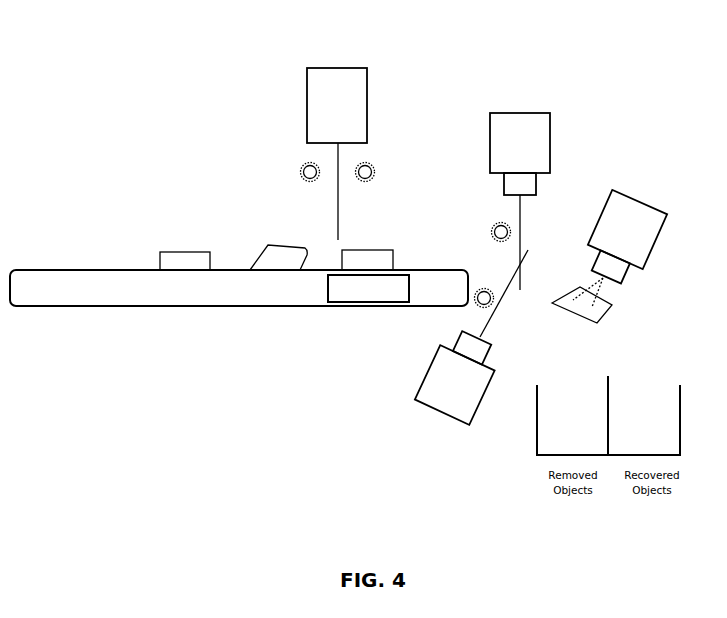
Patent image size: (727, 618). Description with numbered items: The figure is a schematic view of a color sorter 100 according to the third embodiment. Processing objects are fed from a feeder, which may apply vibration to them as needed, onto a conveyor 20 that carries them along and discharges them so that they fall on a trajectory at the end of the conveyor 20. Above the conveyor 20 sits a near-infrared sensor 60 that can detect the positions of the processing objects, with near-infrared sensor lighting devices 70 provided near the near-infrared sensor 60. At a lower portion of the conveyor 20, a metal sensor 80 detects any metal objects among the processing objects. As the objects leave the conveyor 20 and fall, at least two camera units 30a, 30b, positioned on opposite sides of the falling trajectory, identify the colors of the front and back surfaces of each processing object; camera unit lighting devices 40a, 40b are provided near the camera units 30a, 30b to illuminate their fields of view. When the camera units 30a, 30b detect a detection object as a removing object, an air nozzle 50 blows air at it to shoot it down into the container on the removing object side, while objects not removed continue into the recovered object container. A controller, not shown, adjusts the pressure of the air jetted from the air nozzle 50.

The color sorter 100 is at (118, 88).
The conveyor 20 is at (66, 281).
The metal sensor 80 is at (368, 292).
The near-infrared sensor 60 is at (340, 78).
The near-infrared sensor lighting devices 70 is at (369, 162).
The camera unit 30a is at (518, 122).
The camera unit lighting device 40a is at (494, 226).
The camera unit lighting device 40b is at (476, 302).
The camera unit 30b is at (443, 403).
The air nozzle 50 is at (640, 210).